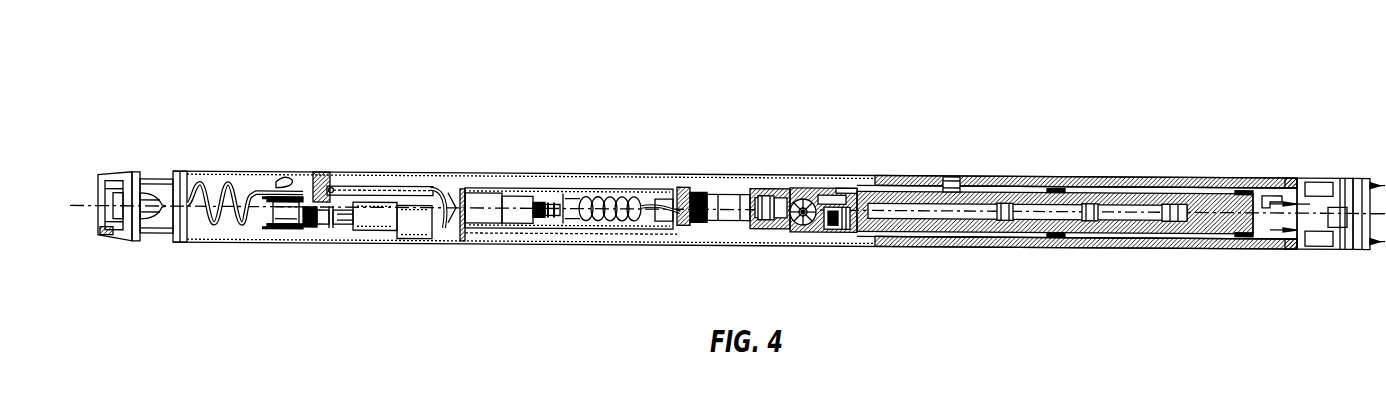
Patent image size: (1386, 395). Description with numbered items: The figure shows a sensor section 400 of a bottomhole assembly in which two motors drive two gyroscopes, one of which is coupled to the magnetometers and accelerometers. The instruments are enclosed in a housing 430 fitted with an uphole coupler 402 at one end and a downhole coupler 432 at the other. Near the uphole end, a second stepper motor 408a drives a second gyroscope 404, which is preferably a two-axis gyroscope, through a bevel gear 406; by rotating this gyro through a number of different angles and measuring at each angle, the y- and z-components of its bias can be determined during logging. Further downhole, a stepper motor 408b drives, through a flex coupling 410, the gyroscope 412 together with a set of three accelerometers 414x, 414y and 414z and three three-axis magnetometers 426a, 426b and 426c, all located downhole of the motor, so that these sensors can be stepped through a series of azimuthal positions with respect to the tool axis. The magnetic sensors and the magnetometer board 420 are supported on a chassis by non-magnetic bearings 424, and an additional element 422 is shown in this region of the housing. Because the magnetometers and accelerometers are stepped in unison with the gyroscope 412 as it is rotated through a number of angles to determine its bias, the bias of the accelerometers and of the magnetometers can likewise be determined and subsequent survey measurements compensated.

The sensor section 400 is at (1064, 103).
The uphole coupler 402 is at (123, 242).
The second gyroscope 404 is at (268, 230).
The bevel gear 406 is at (307, 236).
The second stepper motor 408a is at (400, 190).
The stepper motor 408b is at (507, 188).
The flex coupling 410 is at (570, 193).
The gyroscope 412 is at (733, 232).
The accelerometer 414x is at (848, 232).
The accelerometer 414y is at (800, 192).
The accelerometer 414z is at (765, 192).
The magnetometer board 420 is at (897, 205).
The seal 422 is at (1037, 193).
The non-magnetic bearings 424 is at (1055, 193).
The three-axis magnetometer 426a is at (1003, 218).
The three-axis magnetometer 426b is at (1088, 220).
The three-axis magnetometer 426c is at (1172, 220).
The housing 430 is at (1212, 176).
The downhole coupler 432 is at (1345, 177).